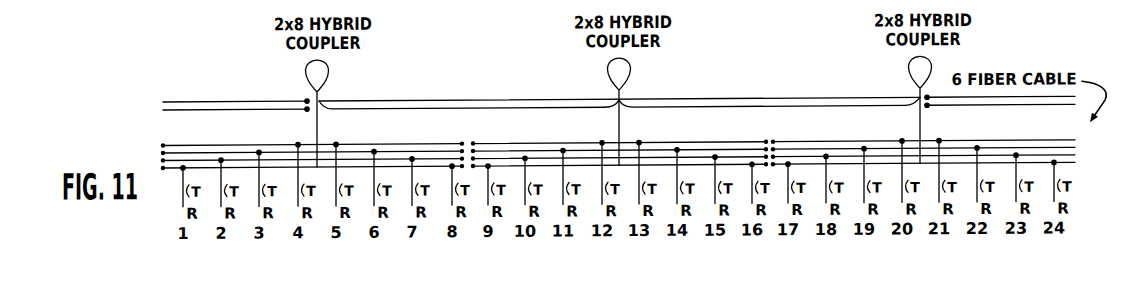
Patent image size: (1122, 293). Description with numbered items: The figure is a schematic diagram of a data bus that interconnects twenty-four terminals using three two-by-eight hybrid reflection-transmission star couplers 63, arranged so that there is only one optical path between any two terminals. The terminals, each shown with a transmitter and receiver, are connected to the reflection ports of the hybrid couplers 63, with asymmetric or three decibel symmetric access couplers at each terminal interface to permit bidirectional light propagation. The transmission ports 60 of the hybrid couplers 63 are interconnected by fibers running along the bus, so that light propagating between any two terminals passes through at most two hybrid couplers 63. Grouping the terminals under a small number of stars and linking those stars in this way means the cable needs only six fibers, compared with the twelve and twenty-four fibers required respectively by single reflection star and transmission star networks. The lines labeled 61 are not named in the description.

The transmission ports 60 is at (416, 111).
The electrical cable / bus lines 61 is at (424, 169).
The hybrid couplers 63 is at (306, 73).